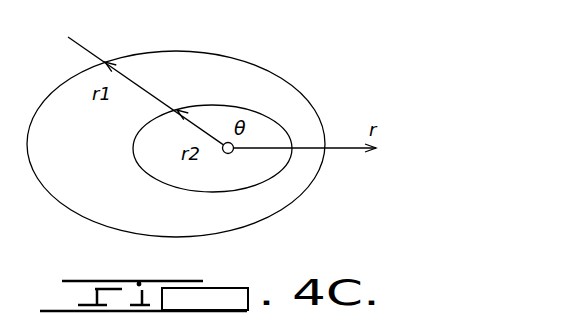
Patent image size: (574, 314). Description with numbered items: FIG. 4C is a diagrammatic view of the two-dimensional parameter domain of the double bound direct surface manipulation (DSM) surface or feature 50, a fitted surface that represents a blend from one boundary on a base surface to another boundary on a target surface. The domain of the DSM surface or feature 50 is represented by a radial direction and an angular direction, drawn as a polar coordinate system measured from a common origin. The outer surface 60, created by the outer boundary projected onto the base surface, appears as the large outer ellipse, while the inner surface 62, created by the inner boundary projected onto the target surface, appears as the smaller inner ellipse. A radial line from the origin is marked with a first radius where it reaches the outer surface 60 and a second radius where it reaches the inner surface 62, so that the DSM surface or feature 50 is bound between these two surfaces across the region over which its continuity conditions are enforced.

The DSM surface or feature 50 is at (189, 125).
The outer surface 60 is at (224, 53).
The inner surface 62 is at (280, 124).